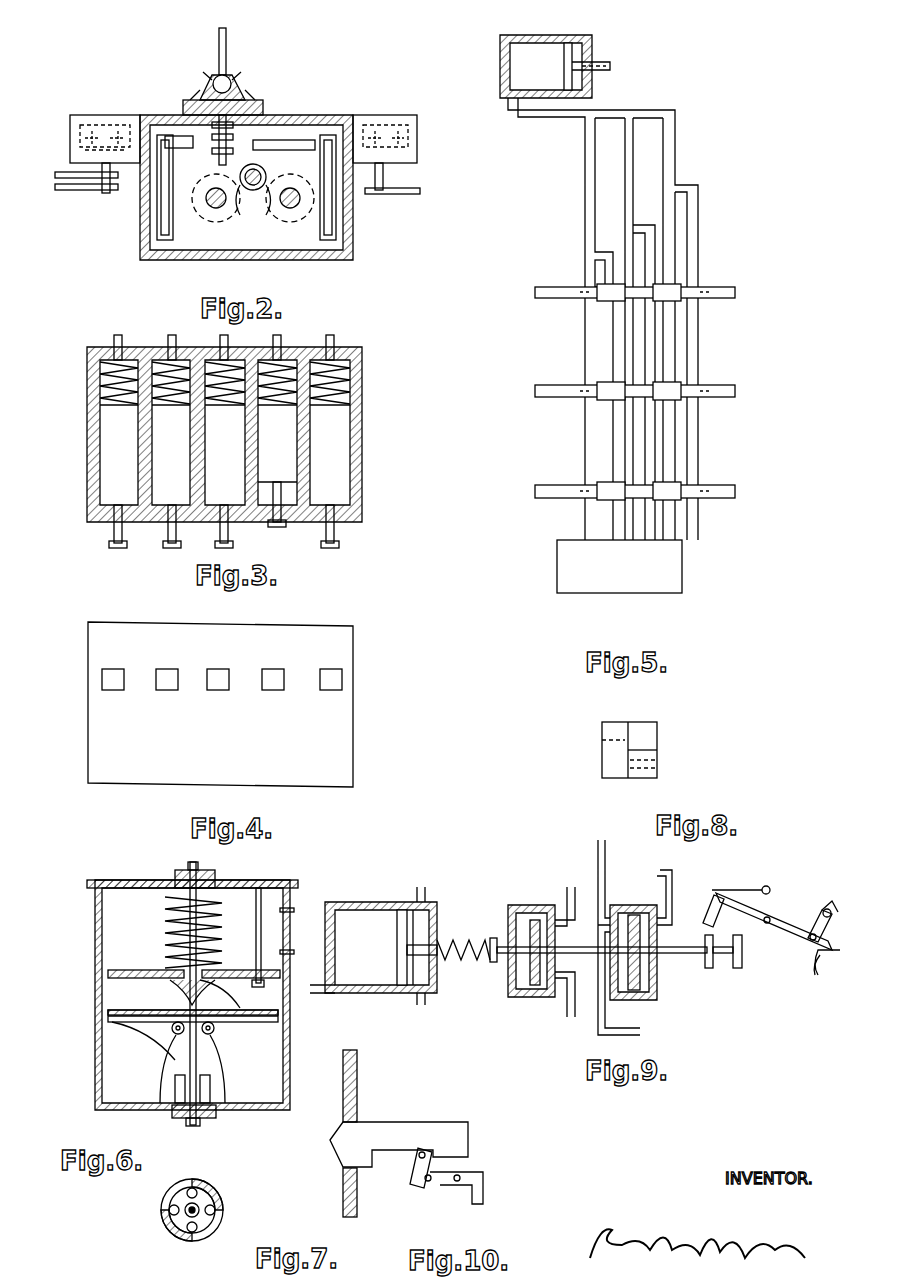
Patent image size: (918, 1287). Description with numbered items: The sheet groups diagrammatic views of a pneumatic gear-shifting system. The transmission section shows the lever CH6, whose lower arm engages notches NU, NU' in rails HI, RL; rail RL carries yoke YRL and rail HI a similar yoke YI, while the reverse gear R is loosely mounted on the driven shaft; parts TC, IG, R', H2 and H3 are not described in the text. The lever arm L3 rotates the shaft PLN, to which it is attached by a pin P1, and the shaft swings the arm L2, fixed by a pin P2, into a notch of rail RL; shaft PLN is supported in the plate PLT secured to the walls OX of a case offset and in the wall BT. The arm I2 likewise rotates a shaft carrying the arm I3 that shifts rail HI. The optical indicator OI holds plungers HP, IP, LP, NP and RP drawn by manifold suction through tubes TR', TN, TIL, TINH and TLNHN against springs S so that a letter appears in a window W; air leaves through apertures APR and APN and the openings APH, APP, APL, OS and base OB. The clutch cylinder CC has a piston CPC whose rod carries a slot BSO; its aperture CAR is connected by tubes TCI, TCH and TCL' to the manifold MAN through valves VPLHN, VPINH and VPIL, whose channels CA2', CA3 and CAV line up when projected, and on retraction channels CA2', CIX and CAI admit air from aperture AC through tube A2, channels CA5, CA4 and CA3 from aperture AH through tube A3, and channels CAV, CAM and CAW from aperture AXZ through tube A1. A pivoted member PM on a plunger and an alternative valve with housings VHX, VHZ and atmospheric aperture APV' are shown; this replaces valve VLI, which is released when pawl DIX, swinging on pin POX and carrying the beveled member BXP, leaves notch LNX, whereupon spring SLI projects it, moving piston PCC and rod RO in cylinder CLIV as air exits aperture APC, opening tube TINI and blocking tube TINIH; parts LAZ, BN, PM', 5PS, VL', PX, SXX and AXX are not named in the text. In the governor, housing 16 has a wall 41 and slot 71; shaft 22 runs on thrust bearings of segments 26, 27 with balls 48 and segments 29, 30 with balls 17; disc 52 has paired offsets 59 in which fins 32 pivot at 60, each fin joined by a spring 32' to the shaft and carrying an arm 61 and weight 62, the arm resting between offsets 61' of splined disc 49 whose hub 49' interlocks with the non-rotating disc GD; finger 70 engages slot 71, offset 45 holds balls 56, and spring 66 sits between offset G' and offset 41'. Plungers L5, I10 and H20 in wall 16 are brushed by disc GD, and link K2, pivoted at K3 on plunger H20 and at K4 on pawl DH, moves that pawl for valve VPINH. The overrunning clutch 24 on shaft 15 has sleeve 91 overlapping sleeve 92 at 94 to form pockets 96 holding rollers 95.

In FIG. 2, the lever CH6 is at (226, 43).
In FIG. 2, the arm I3 is at (88, 128).
In FIG. 2, the heater coil H3 is at (112, 125).
In FIG. 2, the rail HI is at (162, 127).
In FIG. 2, the rail RL is at (312, 135).
In FIG. 2, the arm L2 is at (364, 125).
In FIG. 2, the plate PLT is at (396, 117).
In FIG. 2, the pin P2 is at (394, 140).
In FIG. 2, the walls OX is at (412, 160).
In FIG. 2, the wall BT is at (412, 187).
In FIG. 2, the lever arm L3 is at (410, 194).
In FIG. 2, the shaft PLN is at (388, 195).
In FIG. 2, the pin P1 is at (378, 195).
In FIG. 2, the arm I2 is at (55, 178).
In FIG. 2, the heater H2 is at (60, 190).
In FIG. 2, the housing casing TC is at (141, 215).
In FIG. 2, the yoke YI is at (172, 187).
In FIG. 2, the notch NU is at (199, 140).
In FIG. 2, the notch NU' is at (240, 157).
In FIG. 2, the yoke YRL is at (312, 172).
In FIG. 2, the reverse gear R is at (216, 227).
In FIG. 2, the idler gear IG is at (250, 240).
In FIG. 2, the roller R' is at (290, 227).
In FIG. 3, the tube TLNHN is at (168, 343).
In FIG. 9, the tube TLNHN is at (315, 995).
In FIG. 3, the tube TIL is at (220, 342).
In FIG. 3, the inlet tube TINH is at (113, 345).
In FIG. 3, the tube TN is at (282, 340).
In FIG. 3, the tube TR' is at (348, 343).
In FIG. 3, the spring S is at (350, 387).
In FIG. 3, the optical indicator OI is at (362, 440).
In FIG. 3, the block base OB is at (358, 523).
In FIG. 3, the piston rod APH is at (100, 522).
In FIG. 3, the piston rod APP is at (157, 522).
In FIG. 3, the opening OS is at (118, 550).
In FIG. 3, the piston rod APL is at (210, 522).
In FIG. 3, the aperture APR is at (308, 528).
In FIG. 3, the aperture APN is at (260, 528).
In FIG. 3, the piston HP is at (115, 471).
In FIG. 10, the piston HP is at (465, 1173).
In FIG. 3, the piston IP is at (168, 465).
In FIG. 3, the plunger LP is at (222, 471).
In FIG. 3, the plunger NP is at (277, 480).
In FIG. 3, the plunger RP is at (328, 459).
In FIG. 4, the window W is at (342, 681).
In FIG. 5, the pneumatic cylinder CC is at (522, 55).
In FIG. 5, the piston CPC is at (558, 45).
In FIG. 5, the slot BSO is at (600, 62).
In FIG. 5, the aperture CAR is at (510, 104).
In FIG. 5, the tube TCI is at (635, 138).
In FIG. 5, the tube TCL' is at (702, 155).
In FIG. 5, the tube TCH is at (585, 188).
In FIG. 5, the tube A1 is at (688, 183).
In FIG. 5, the tube A2 is at (641, 222).
In FIG. 5, the tube A3 is at (604, 252).
In FIG. 5, the valve VPINH is at (535, 292).
In FIG. 5, the channel CAW is at (695, 290).
In FIG. 5, the channel CA3 is at (607, 298).
In FIG. 5, the channel CAI is at (650, 300).
In FIG. 5, the channel CA4 is at (600, 387).
In FIG. 5, the valve VPLHN is at (535, 390).
In FIG. 5, the channel CA2' is at (599, 402).
In FIG. 5, the channel CAM is at (690, 396).
In FIG. 5, the channel CA5 is at (604, 485).
In FIG. 5, the channel CIX is at (655, 485).
In FIG. 5, the channel CAV is at (695, 487).
In FIG. 5, the valve VPIL is at (535, 490).
In FIG. 5, the aperture AH is at (610, 512).
In FIG. 5, the aperture AXZ is at (692, 515).
In FIG. 5, the aperture AC is at (650, 515).
In FIG. 5, the manifold MAN is at (682, 573).
In FIG. 8, the lever LAZ is at (602, 740).
In FIG. 8, the member PM is at (647, 746).
In FIG. 8, the band BN is at (657, 745).
In FIG. 8, the plate PM' is at (663, 768).
In FIG. 6, the balls 48 is at (188, 868).
In FIG. 6, the thrust bearing segment 26 is at (175, 875).
In FIG. 6, the thrust bearing segment 27 is at (215, 880).
In FIG. 6, the wall 41 is at (199, 868).
In FIG. 6, the plunger H20 is at (290, 895).
In FIG. 10, the plunger H20 is at (383, 1122).
In FIG. 6, the housing 16 is at (95, 911).
In FIG. 10, the housing 16 is at (343, 1130).
In FIG. 6, the offset 41' is at (149, 900).
In FIG. 6, the spring 66 is at (214, 910).
In FIG. 6, the slot 71 is at (256, 925).
In FIG. 6, the finger 70 is at (256, 978).
In FIG. 6, the disc GD is at (108, 970).
In FIG. 6, the offset G' is at (140, 957).
In FIG. 6, the plunger I10 is at (299, 917).
In FIG. 6, the plunger L5 is at (292, 958).
In FIG. 6, the disc 49 is at (120, 1000).
In FIG. 6, the balls 56 is at (178, 1005).
In FIG. 6, the hub 49' is at (224, 994).
In FIG. 6, the offset 45 is at (235, 1004).
In FIG. 6, the arm 61 is at (169, 1014).
In FIG. 6, the offsets 61' is at (94, 1036).
In FIG. 6, the offsets 59 is at (172, 1030).
In FIG. 6, the pivot 60 is at (182, 1032).
In FIG. 6, the collar or disc 52 is at (210, 1033).
In FIG. 6, the spring 32' is at (142, 1049).
In FIG. 6, the shaft 22 is at (210, 1070).
In FIG. 6, the fin 32 is at (160, 1087).
In FIG. 6, the weight 62 is at (175, 1090).
In FIG. 6, the thrust bearing segment 29 is at (215, 1108).
In FIG. 6, the thrust bearing segment 30 is at (176, 1120).
In FIG. 6, the balls 17 is at (208, 1120).
In FIG. 7, the overrunning clutch 24 is at (203, 1182).
In FIG. 7, the shaft 15 is at (220, 1194).
In FIG. 7, the overlap 94 is at (178, 1197).
In FIG. 7, the rollers 95 is at (168, 1212).
In FIG. 7, the sleeve 92 is at (180, 1228).
In FIG. 7, the sleeve 91 is at (222, 1218).
In FIG. 7, the pockets 96 is at (205, 1222).
In FIG. 9, the tube TINI is at (598, 840).
In FIG. 9, the tube TINIH is at (570, 885).
In FIG. 9, the valve housing VHZ is at (636, 905).
In FIG. 9, the lever 5PS is at (738, 890).
In FIG. 9, the pivotal pin POX is at (770, 915).
In FIG. 9, the pawl DIX is at (805, 915).
In FIG. 9, the cylinder CLIV is at (370, 908).
In FIG. 9, the piston PCC is at (400, 885).
In FIG. 9, the aperture APC is at (426, 888).
In FIG. 9, the valve VL' is at (526, 933).
In FIG. 9, the aperture APV' is at (499, 938).
In FIG. 9, the pin PX is at (835, 925).
In FIG. 9, the member BXP is at (838, 955).
In FIG. 9, the spring SXX is at (822, 970).
In FIG. 9, the shaft AXX is at (657, 975).
In FIG. 9, the notch LNX is at (722, 970).
In FIG. 9, the valve VLI is at (632, 1000).
In FIG. 9, the spring SLI is at (460, 963).
In FIG. 9, the rod RO is at (421, 998).
In FIG. 9, the valve housing VHX is at (515, 998).
In FIG. 10, the pivot K3 is at (438, 1148).
In FIG. 10, the link K2 is at (418, 1175).
In FIG. 10, the pivot K4 is at (428, 1185).
In FIG. 10, the pawl DH is at (484, 1192).